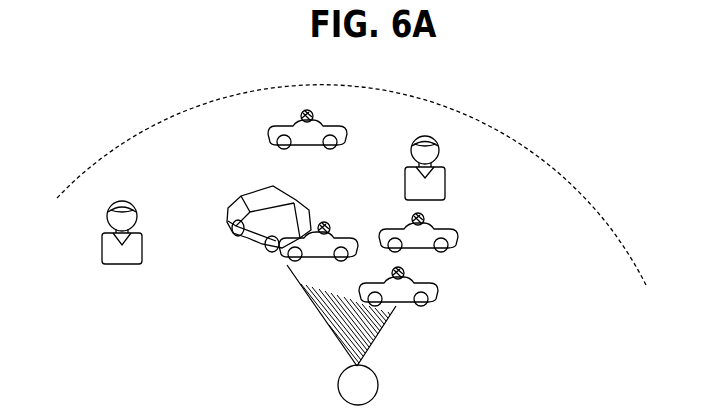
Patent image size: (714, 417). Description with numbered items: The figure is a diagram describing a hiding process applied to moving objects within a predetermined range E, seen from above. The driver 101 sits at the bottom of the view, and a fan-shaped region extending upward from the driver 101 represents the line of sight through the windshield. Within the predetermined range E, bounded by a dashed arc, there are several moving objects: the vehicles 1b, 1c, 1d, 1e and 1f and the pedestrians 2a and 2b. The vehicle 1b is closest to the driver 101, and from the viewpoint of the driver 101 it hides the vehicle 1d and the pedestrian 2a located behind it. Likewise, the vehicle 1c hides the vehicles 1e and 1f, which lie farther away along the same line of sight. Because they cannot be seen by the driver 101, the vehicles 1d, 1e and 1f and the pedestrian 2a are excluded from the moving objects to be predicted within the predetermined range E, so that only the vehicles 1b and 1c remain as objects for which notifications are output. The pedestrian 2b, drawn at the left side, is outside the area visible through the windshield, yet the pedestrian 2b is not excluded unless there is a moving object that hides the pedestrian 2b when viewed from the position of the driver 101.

The predetermined range E is at (560, 168).
The vehicle 1b is at (438, 289).
The vehicle 1c is at (338, 223).
The vehicle 1d is at (458, 235).
The vehicle 1e is at (238, 197).
The vehicle 1f is at (347, 129).
The pedestrian 2a is at (445, 177).
The pedestrian 2b is at (143, 246).
The driver 101 is at (378, 383).